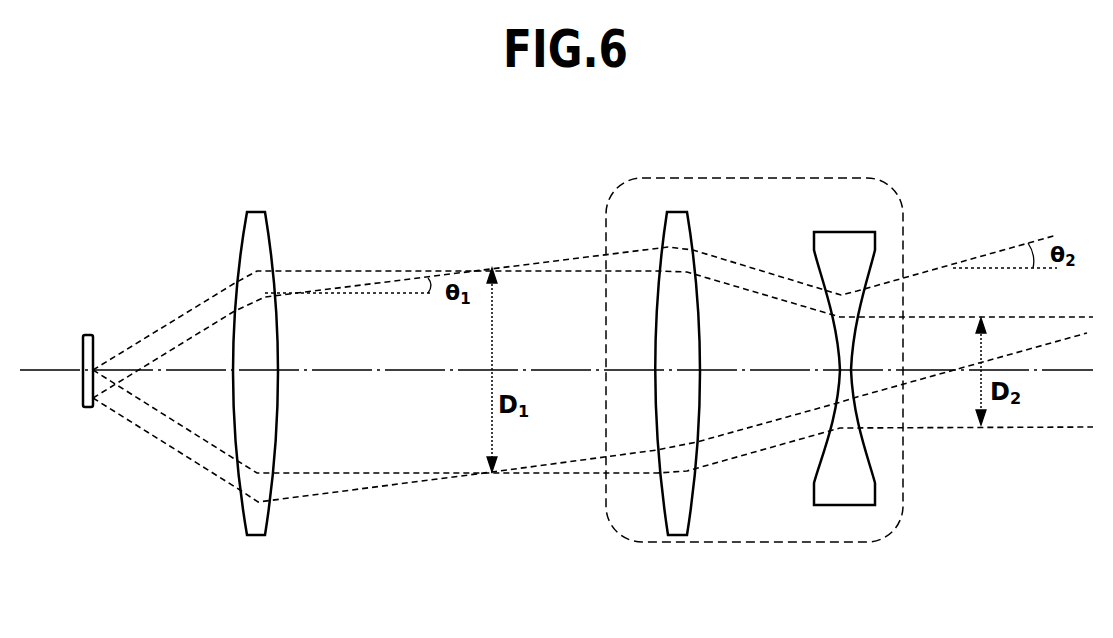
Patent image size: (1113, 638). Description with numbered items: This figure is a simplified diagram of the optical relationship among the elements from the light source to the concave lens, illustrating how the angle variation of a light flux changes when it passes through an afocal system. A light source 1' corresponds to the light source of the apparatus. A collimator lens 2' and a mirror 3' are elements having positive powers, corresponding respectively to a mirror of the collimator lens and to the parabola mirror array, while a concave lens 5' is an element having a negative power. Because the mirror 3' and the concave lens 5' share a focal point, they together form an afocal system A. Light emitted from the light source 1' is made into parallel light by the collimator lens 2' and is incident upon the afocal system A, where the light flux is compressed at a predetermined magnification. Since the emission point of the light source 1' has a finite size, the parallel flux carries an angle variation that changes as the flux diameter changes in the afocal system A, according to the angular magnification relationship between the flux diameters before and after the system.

The light source 1' is at (89, 408).
The collimator lens 2' is at (255, 410).
The mirror 3' is at (677, 410).
The concave lens 5' is at (844, 417).
The afocal system A is at (754, 342).